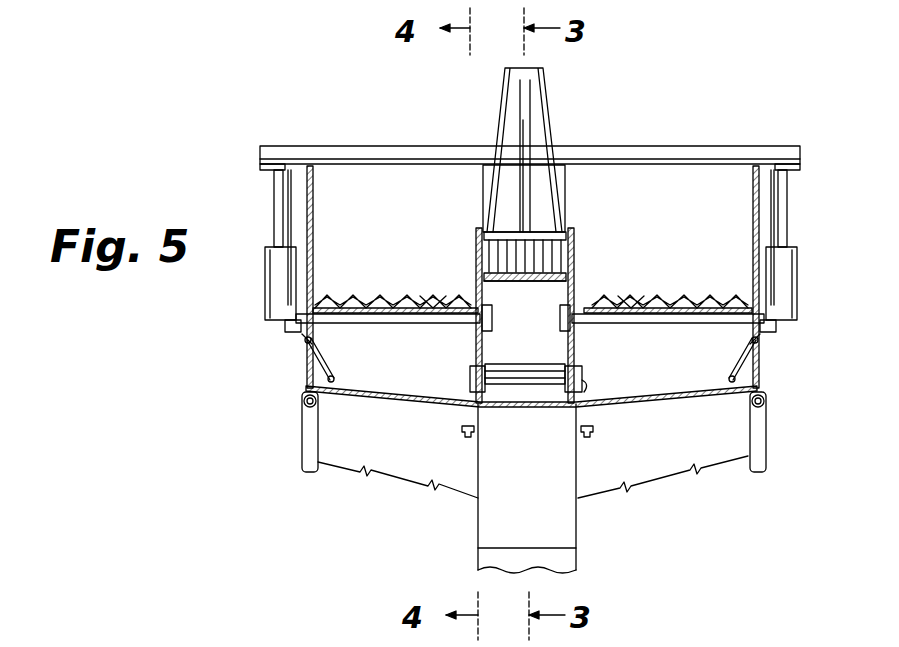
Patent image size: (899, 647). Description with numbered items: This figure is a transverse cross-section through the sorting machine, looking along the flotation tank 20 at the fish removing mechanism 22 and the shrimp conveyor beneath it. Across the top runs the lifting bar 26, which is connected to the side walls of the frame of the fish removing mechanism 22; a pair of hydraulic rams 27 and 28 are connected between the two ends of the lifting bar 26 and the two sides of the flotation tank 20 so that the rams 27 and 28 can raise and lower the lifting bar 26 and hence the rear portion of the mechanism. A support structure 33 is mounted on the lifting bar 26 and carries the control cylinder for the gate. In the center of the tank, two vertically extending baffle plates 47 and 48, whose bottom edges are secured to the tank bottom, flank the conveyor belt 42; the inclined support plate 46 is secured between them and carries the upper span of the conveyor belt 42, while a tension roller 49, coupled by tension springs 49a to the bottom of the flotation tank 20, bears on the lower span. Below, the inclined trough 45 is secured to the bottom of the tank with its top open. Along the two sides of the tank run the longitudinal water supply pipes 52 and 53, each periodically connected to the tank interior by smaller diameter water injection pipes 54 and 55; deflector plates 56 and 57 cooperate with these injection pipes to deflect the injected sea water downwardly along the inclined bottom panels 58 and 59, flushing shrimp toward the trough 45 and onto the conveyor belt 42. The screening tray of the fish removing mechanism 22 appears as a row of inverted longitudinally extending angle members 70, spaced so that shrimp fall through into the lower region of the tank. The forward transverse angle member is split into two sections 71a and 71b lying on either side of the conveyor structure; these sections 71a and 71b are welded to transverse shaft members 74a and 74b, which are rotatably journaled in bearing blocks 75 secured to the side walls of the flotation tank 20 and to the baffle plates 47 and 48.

The flotation tank 20 is at (300, 375).
The fish removing mechanism 22 is at (306, 195).
The lifting bar 26 is at (330, 146).
The hydraulic ram 27 is at (784, 272).
The hydraulic ram 28 is at (278, 292).
The support structure 33 is at (540, 98).
The conveyor belt 42 is at (545, 262).
The inclined trough 45 is at (580, 528).
The inclined support plate 46 is at (536, 282).
The baffle plate 47 is at (474, 238).
The baffle plate 48 is at (575, 236).
The tension roller 49 is at (508, 368).
The tension springs 49a is at (600, 390).
The longitudinal water supply pipe 52 is at (302, 436).
The longitudinal water supply pipe 53 is at (766, 430).
The water injection pipes 54 is at (336, 374).
The water injection pipes 55 is at (740, 372).
The deflector plate 56 is at (322, 362).
The deflector plate 57 is at (744, 362).
The inclined bottom panel 58 is at (354, 476).
The inclined bottom panel 59 is at (678, 470).
The inverted angle members 70 is at (385, 298).
The angle member section 71a is at (438, 298).
The angle member section 71b is at (662, 294).
The transverse shaft member 74a is at (440, 325).
The transverse shaft member 74b is at (648, 325).
The bearing blocks 75 is at (305, 358).